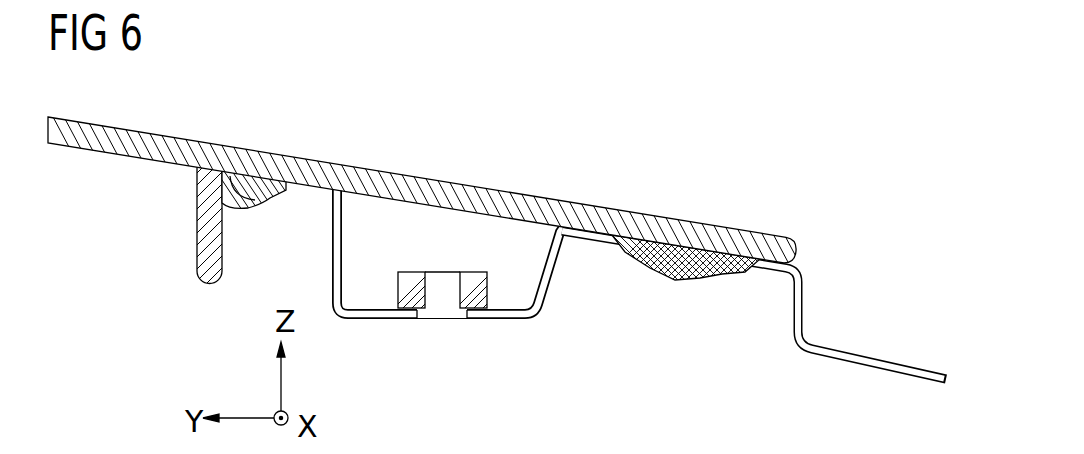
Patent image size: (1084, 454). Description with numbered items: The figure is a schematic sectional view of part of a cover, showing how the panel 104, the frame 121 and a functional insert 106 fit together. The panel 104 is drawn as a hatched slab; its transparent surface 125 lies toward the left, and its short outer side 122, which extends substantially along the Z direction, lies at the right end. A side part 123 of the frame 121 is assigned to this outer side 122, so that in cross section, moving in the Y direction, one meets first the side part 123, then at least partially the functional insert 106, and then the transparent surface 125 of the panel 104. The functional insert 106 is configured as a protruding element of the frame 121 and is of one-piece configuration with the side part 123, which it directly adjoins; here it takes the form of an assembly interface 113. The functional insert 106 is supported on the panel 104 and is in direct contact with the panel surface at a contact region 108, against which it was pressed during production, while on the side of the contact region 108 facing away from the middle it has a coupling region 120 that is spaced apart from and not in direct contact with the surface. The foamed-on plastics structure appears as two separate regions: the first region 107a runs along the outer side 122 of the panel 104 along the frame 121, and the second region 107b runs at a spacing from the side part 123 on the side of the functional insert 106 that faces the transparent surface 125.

The panel 104 is at (457, 185).
The functional insert 106 is at (538, 317).
The contact region 108 is at (297, 187).
The assembly interface 113 is at (443, 300).
The coupling region 120 is at (230, 187).
The frame 121 is at (803, 278).
The outer side 122 is at (798, 253).
The side part 123 is at (837, 363).
The transparent surface 125 is at (121, 155).
The first region of the foamed-on plastics structure 107a is at (700, 283).
The second region of the foamed-on plastics structure 107b is at (197, 262).